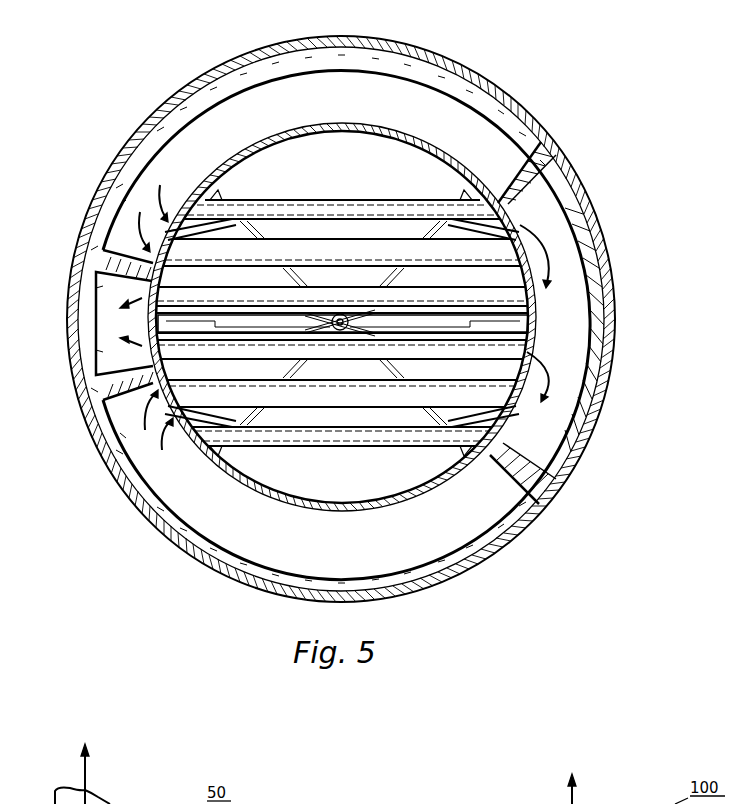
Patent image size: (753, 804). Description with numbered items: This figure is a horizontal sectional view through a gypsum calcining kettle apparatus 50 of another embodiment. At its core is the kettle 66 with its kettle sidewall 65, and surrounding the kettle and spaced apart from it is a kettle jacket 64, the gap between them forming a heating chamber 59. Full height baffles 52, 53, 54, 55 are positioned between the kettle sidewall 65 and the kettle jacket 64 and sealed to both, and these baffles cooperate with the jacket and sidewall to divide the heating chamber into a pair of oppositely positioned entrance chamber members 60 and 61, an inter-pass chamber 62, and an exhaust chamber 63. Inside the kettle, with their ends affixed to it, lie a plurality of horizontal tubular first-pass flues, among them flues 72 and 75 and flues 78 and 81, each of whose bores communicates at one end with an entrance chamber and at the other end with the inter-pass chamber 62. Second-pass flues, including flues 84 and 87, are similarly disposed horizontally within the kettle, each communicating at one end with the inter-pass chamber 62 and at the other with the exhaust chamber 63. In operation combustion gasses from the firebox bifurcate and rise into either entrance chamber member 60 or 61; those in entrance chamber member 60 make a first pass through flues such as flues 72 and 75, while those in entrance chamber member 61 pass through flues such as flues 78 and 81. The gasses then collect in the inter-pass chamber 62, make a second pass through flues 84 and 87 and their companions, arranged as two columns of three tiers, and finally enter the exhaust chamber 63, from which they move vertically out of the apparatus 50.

The apparatus 50 is at (552, 108).
The full height baffle 52 is at (95, 274).
The full height baffle 53 is at (546, 180).
The full height baffle 54 is at (540, 462).
The full height baffle 55 is at (104, 413).
The heating chamber 59 is at (198, 142).
The entrance chamber member 60 is at (292, 88).
The entrance chamber member 61 is at (462, 522).
The inter-pass chamber 62 is at (573, 276).
The exhaust chamber 63 is at (104, 319).
The kettle jacket 64 is at (613, 316).
The kettle sidewall 65 is at (541, 333).
The kettle 66 is at (421, 130).
The first-pass flue 72 is at (326, 201).
The first-pass flue 75 is at (373, 247).
The first-pass flue 78 is at (355, 398).
The first-pass flue 81 is at (358, 442).
The second-pass flue 84 is at (260, 292).
The second-pass flue 87 is at (270, 350).